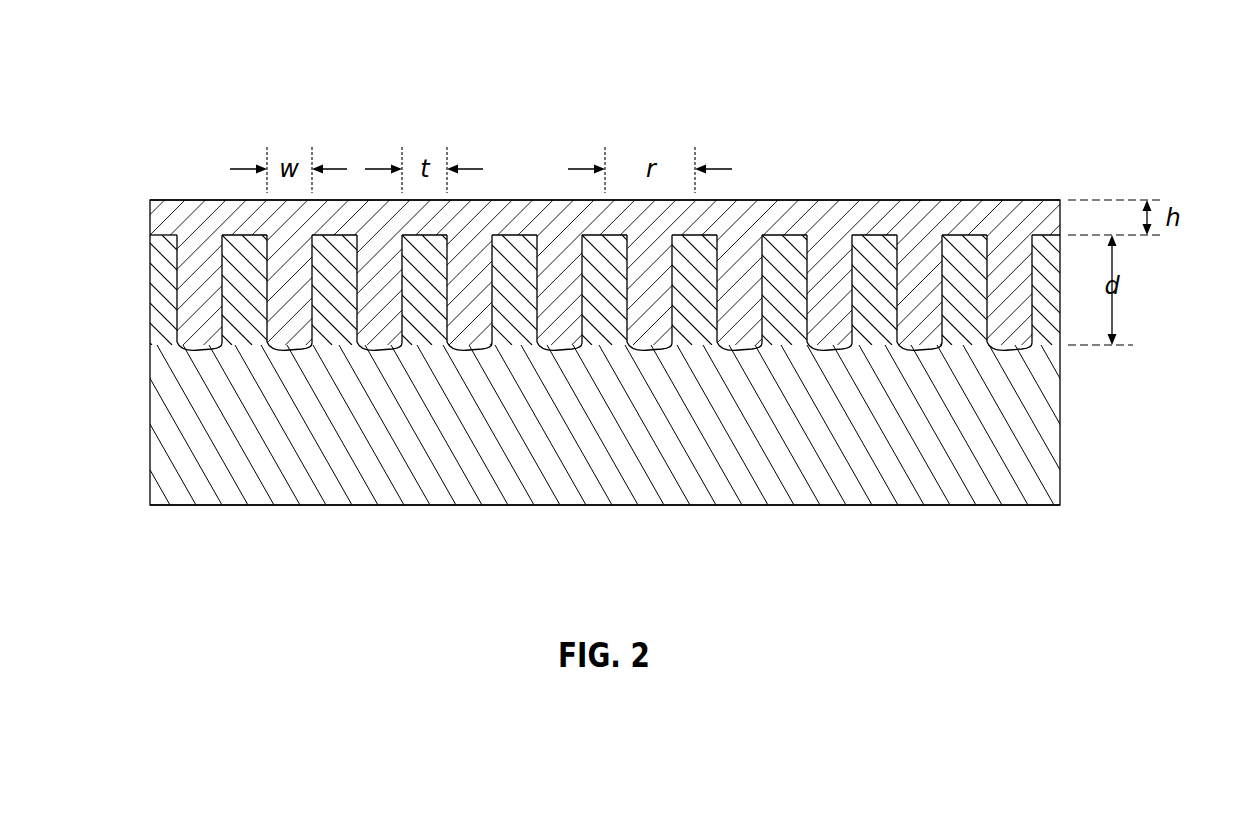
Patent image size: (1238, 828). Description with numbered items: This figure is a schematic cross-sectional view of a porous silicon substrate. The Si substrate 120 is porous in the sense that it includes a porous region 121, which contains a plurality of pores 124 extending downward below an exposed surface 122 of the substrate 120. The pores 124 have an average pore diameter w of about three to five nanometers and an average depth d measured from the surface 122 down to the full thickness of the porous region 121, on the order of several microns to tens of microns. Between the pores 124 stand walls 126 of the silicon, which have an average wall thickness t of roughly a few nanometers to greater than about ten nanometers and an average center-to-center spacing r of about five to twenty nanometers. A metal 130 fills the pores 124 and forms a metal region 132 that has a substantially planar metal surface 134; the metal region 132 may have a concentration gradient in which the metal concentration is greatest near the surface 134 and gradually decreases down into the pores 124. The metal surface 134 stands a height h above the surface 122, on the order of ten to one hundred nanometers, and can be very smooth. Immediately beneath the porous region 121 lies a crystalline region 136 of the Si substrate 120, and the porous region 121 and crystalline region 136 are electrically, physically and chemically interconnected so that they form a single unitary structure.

The Si substrate 120 is at (605, 457).
The porous region 121 is at (561, 348).
The exposed surface 122 is at (160, 235).
The pores 124 is at (198, 248).
The walls 126 is at (512, 255).
The metal 130 is at (187, 329).
The metal region 132 is at (916, 198).
The metal surface 134 is at (1048, 199).
The crystalline region 136 is at (925, 488).